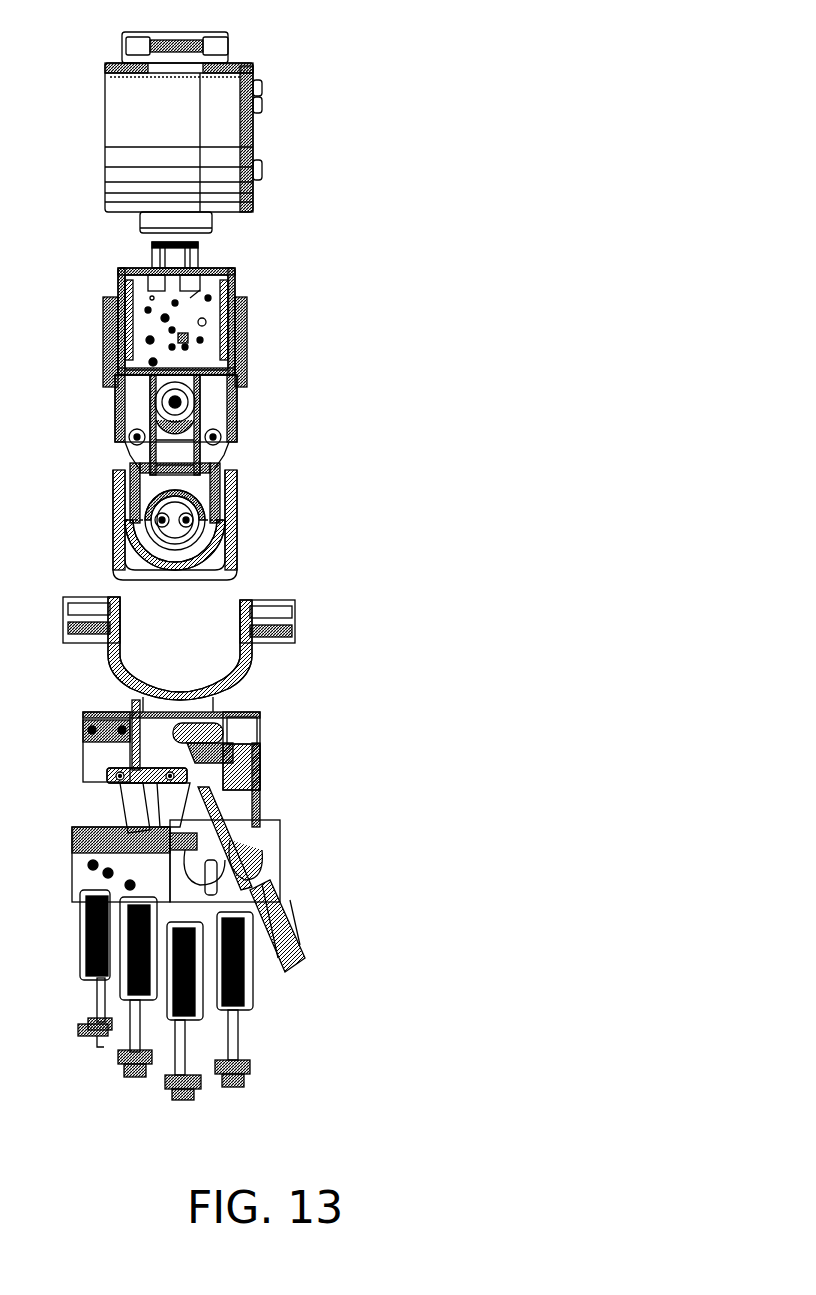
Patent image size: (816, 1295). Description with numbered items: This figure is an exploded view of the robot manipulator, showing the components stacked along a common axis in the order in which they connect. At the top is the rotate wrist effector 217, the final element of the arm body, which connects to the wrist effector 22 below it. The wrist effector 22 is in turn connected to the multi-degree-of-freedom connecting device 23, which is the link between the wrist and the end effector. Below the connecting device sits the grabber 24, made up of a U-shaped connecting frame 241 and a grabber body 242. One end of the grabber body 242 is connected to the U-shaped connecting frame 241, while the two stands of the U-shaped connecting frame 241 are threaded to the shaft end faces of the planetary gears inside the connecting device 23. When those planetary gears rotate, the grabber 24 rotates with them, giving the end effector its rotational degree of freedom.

The rotate wrist effector 217 is at (233, 133).
The wrist effector 22 is at (243, 383).
The multi-degree-of-freedom connecting device 23 is at (238, 548).
The U-shaped connecting frame 241 is at (218, 698).
The grabber body 242 is at (177, 785).
The grabber 24 is at (258, 878).